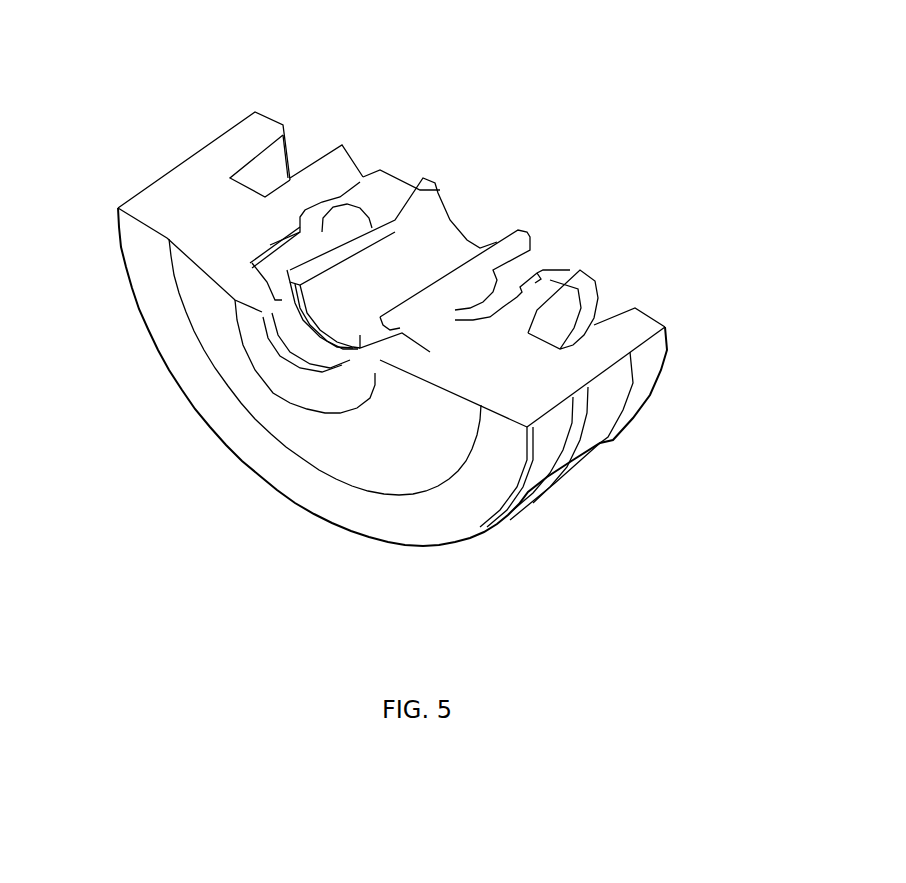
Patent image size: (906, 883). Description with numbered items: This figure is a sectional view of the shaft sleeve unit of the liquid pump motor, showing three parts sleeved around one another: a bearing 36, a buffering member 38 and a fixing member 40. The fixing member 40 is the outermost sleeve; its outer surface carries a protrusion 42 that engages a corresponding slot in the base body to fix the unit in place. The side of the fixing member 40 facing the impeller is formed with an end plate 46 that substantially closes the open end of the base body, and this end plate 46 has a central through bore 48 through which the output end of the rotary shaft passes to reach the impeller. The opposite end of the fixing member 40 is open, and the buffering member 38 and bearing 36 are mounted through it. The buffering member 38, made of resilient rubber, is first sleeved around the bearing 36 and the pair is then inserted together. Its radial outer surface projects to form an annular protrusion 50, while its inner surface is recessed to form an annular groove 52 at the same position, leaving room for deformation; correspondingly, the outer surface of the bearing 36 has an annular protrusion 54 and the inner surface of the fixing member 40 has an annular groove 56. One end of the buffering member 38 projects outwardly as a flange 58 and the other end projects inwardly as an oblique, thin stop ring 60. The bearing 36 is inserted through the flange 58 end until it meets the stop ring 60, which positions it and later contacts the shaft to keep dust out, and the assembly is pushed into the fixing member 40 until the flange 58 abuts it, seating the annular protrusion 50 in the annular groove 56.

The bearing 36 is at (503, 243).
The buffering member 38 is at (512, 268).
The fixing member 40 is at (608, 348).
The protrusion 42 is at (583, 413).
The end plate 46 is at (238, 380).
The through bore 48 is at (317, 353).
The annular protrusion 50 is at (323, 208).
The annular groove 52 is at (343, 205).
The annular protrusion 54 is at (355, 217).
The annular groove 56 is at (307, 207).
The flange 58 is at (580, 275).
The stop ring 60 is at (280, 288).